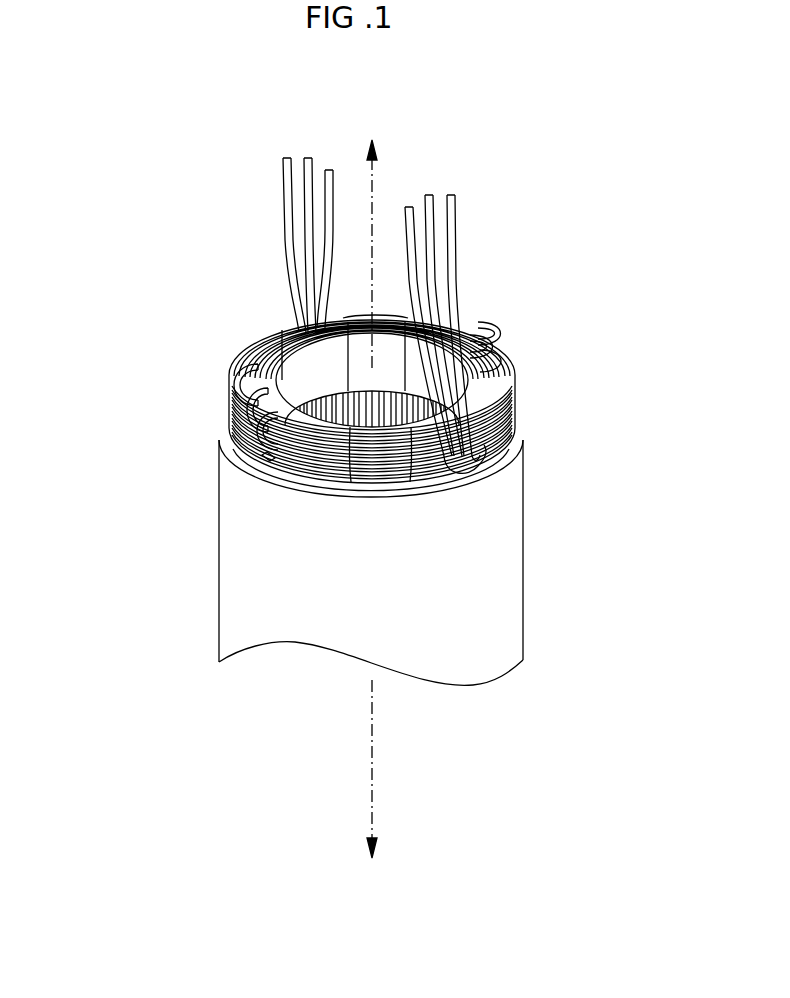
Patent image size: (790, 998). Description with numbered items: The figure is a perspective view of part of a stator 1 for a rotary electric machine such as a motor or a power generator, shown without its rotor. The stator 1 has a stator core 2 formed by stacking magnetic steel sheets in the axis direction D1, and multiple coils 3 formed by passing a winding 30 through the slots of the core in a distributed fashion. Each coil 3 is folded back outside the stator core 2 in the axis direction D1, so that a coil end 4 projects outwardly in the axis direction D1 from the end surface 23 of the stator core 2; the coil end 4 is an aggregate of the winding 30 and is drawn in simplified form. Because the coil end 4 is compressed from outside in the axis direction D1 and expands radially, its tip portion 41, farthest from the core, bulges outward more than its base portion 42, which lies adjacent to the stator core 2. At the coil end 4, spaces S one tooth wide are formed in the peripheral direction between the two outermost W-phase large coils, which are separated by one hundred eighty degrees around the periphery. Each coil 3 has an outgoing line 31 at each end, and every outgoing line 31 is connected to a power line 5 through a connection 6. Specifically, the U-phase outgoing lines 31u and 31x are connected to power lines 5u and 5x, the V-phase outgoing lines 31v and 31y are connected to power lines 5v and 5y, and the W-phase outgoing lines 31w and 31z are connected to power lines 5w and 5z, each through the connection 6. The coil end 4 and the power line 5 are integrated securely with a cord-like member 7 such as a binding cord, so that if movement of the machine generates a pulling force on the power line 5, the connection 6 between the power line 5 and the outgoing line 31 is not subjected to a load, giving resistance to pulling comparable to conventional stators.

The stator 1 is at (598, 152).
The stator core 2 is at (524, 542).
The coil 3 is at (548, 386).
The coil end 4 is at (405, 441).
The power line 5 is at (374, 259).
The power line 5u is at (464, 287).
The power line 5v is at (409, 204).
The power line 5w is at (287, 155).
The power line 5x is at (308, 155).
The power line 5y is at (329, 167).
The power line 5z is at (429, 192).
The connection 6 is at (240, 460).
The cord-like member 7 is at (347, 463).
The end surface 23 is at (235, 457).
The winding 30 is at (297, 443).
The outgoing line 31 is at (373, 342).
The outgoing line 31u is at (544, 340).
The outgoing line 31v is at (245, 443).
The outgoing line 31w is at (233, 400).
The outgoing line 31x is at (232, 372).
The outgoing line 31y is at (490, 322).
The outgoing line 31z is at (490, 340).
The tip portion 41 is at (510, 370).
The base portion 42 is at (382, 467).
The space S is at (286, 320).
The axis direction D1 is at (372, 760).